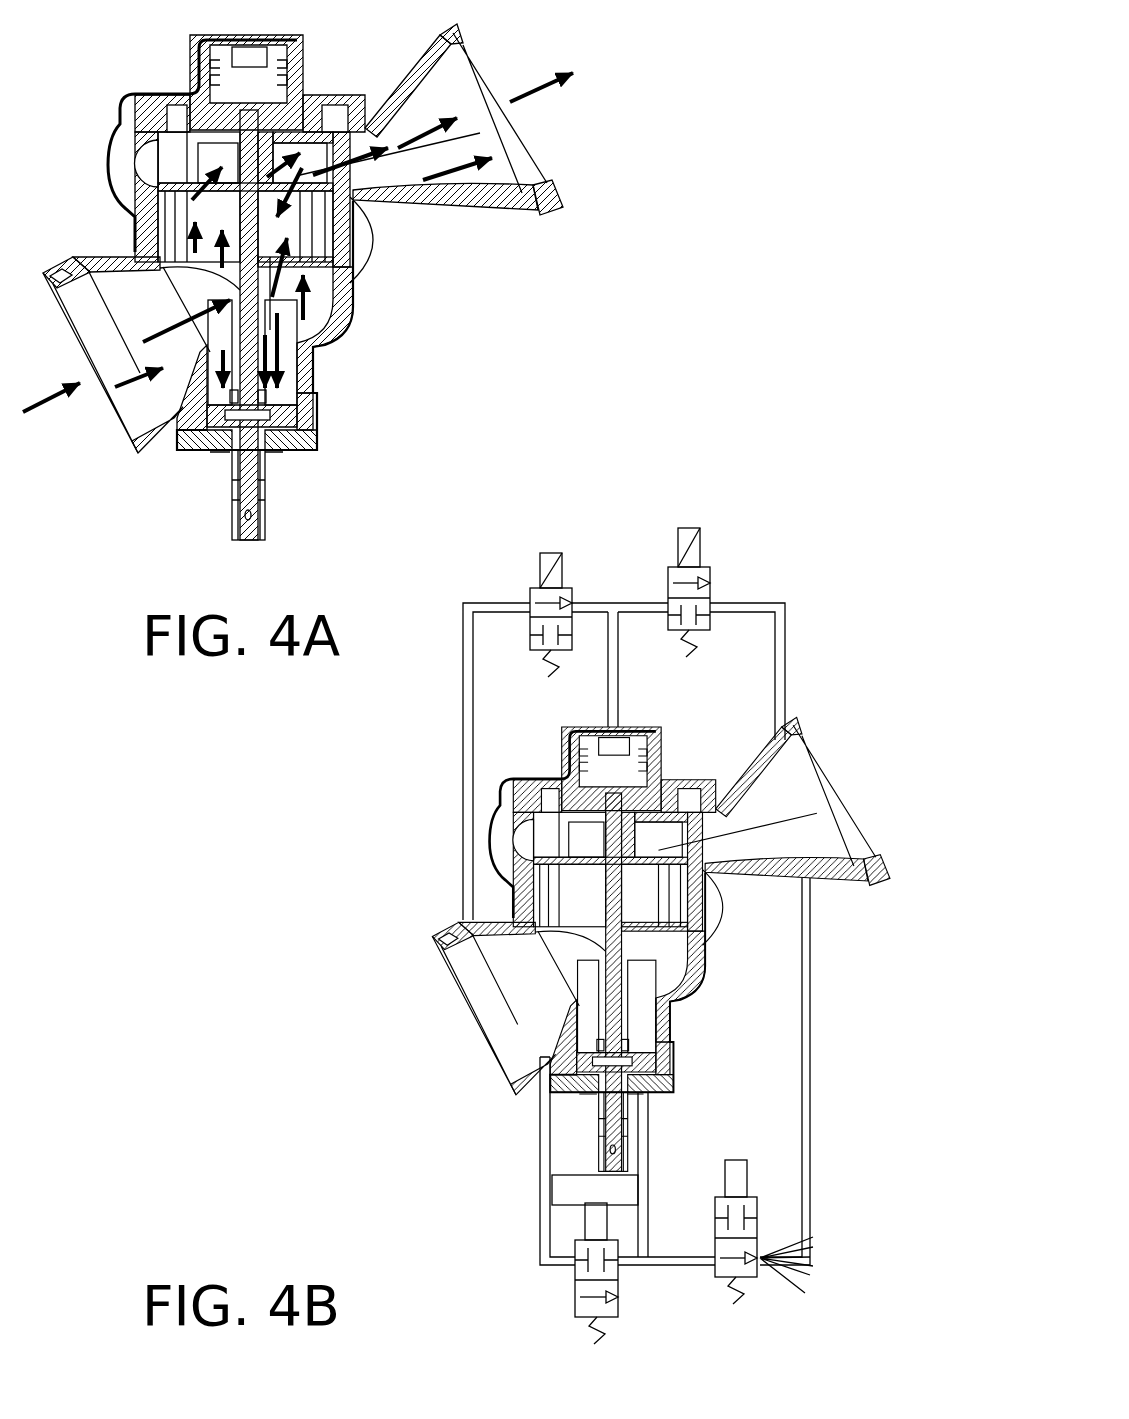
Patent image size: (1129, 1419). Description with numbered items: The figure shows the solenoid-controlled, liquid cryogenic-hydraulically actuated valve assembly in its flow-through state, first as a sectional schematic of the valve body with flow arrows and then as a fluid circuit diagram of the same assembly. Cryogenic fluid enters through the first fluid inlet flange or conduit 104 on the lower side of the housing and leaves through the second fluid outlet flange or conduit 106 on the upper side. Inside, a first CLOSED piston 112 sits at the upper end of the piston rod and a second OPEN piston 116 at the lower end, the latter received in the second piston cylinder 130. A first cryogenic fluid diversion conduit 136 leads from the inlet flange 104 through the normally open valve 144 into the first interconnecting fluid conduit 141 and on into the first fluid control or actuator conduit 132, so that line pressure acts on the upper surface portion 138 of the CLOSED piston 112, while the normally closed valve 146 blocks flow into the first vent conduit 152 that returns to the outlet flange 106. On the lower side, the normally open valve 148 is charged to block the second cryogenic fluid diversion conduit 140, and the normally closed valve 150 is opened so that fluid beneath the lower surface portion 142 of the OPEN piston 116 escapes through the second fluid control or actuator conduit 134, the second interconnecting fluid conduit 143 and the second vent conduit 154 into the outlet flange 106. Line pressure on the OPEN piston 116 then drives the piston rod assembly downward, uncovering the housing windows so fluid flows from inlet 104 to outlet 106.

In FIG. 4A, the first fluid inlet flange or conduit 104 is at (130, 408).
In FIG. 4B, the first fluid inlet flange or conduit 104 is at (517, 1038).
In FIG. 4A, the second fluid outlet flange or conduit 106 is at (440, 117).
In FIG. 4B, the second fluid outlet flange or conduit 106 is at (833, 857).
In FIG. 4A, the first CLOSED piston 112 is at (193, 87).
In FIG. 4B, the first CLOSED piston 112 is at (645, 790).
In FIG. 4A, the second OPEN piston 116 is at (290, 397).
In FIG. 4B, the second OPEN piston 116 is at (653, 1050).
In FIG. 4A, the second piston cylinder 130 is at (293, 452).
In FIG. 4B, the first fluid control or actuator conduit 132 is at (615, 708).
In FIG. 4B, the second fluid control or actuator conduit 134 is at (697, 967).
In FIG. 4B, the first cryogenic fluid diversion conduit 136 is at (470, 687).
In FIG. 4B, the upper surface portion of the first CLOSED piston 138 is at (565, 768).
In FIG. 4B, the second cryogenic fluid diversion conduit 140 is at (547, 1160).
In FIG. 4B, the first interconnecting fluid conduit 141 is at (580, 608).
In FIG. 4A, the lower surface portion of the second OPEN piston 142 is at (220, 432).
In FIG. 4B, the lower surface portion of the second OPEN piston 142 is at (570, 1077).
In FIG. 4B, the second interconnecting fluid conduit 143 is at (635, 1267).
In FIG. 4B, the first two-position solenoid-controlled normally open valve 144 is at (530, 600).
In FIG. 4B, the second two-position solenoid-controlled normally closed valve 146 is at (713, 570).
In FIG. 4B, the third two-position solenoid-controlled normally open valve 148 is at (577, 1317).
In FIG. 4B, the fourth two-position solenoid-controlled normally closed valve 150 is at (758, 1208).
In FIG. 4B, the first vent conduit 152 is at (778, 682).
In FIG. 4B, the second vent conduit 154 is at (803, 1080).